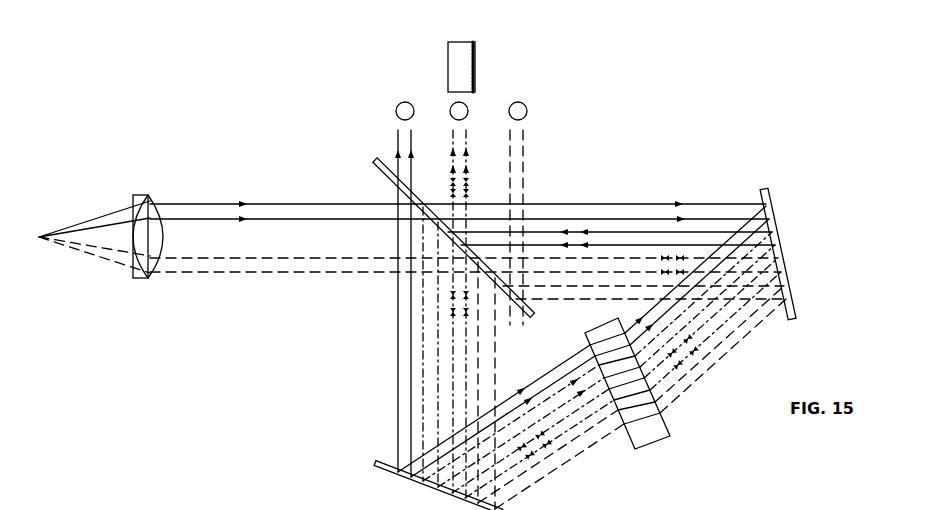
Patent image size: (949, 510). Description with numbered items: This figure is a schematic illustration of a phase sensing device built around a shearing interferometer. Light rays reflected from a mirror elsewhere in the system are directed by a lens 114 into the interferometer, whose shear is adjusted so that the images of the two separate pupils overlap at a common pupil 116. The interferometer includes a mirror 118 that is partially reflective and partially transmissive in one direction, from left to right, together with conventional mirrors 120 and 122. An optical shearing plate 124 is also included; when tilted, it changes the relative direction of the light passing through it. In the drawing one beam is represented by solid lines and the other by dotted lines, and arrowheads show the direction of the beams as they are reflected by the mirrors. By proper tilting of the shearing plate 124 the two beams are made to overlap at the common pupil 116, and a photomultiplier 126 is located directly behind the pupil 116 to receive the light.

The lens 114 is at (153, 192).
The common pupil 116 is at (466, 117).
The mirror 118 is at (375, 160).
The mirror 120 is at (375, 465).
The mirror 122 is at (769, 197).
The optical shearing plate 124 is at (662, 440).
The photomultiplier 126 is at (475, 52).